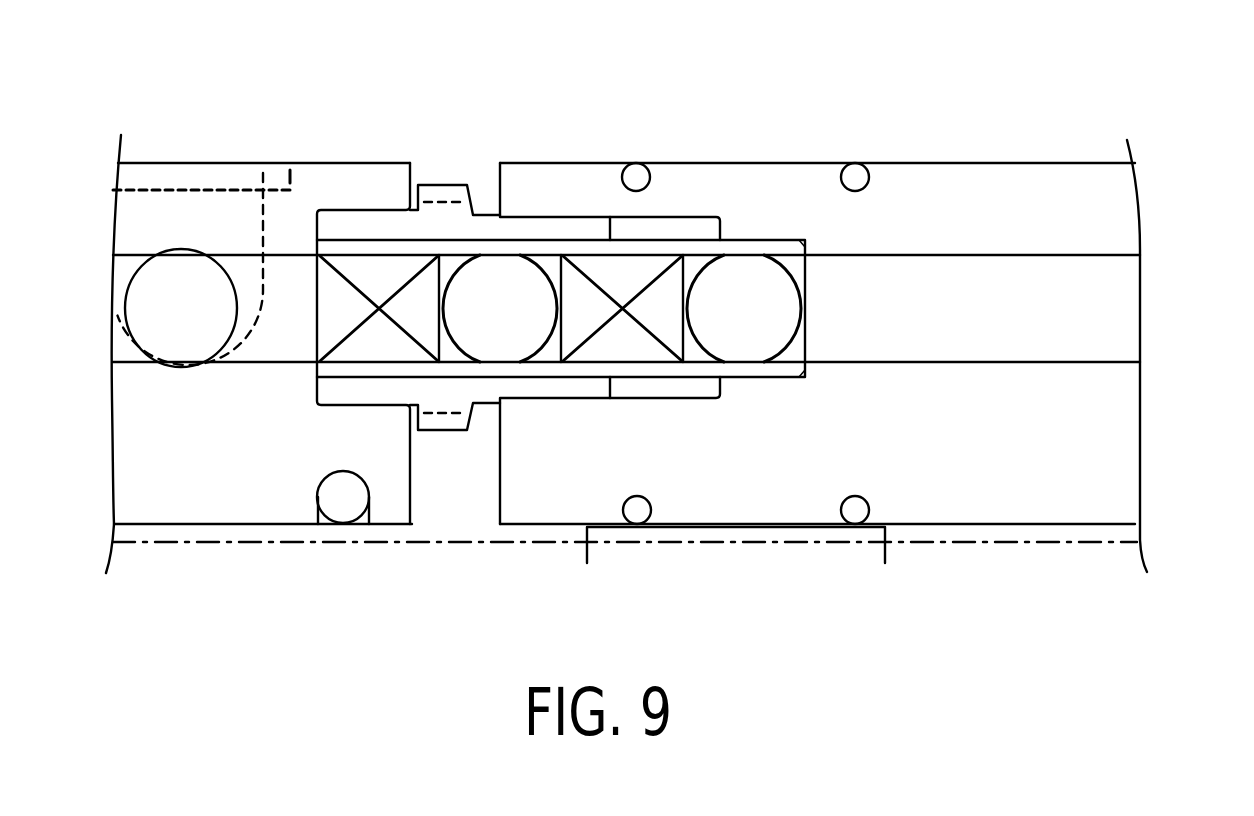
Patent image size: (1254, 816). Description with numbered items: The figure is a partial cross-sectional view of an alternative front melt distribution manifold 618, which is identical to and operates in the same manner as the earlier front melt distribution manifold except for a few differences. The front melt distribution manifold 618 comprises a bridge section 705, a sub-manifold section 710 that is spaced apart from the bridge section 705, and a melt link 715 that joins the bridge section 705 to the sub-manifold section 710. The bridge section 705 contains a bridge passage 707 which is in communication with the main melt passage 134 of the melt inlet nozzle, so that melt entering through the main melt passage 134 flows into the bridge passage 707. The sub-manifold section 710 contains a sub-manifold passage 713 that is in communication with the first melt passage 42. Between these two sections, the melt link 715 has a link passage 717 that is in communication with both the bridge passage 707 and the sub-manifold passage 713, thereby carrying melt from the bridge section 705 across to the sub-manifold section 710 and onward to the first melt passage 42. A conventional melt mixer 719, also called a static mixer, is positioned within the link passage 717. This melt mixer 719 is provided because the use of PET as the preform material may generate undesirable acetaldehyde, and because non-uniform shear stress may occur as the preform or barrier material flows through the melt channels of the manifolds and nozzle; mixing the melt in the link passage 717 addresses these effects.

The first melt passage 42 is at (1148, 312).
The main melt passage 134 is at (212, 165).
The front melt distribution manifold 618 is at (935, 188).
The bridge section 705 is at (242, 505).
The bridge passage 707 is at (283, 280).
The sub-manifold section 710 is at (968, 503).
The sub-manifold passage 713 is at (1005, 347).
The melt link 715 is at (438, 423).
The link passage 717 is at (422, 247).
The melt mixer 719 is at (663, 283).